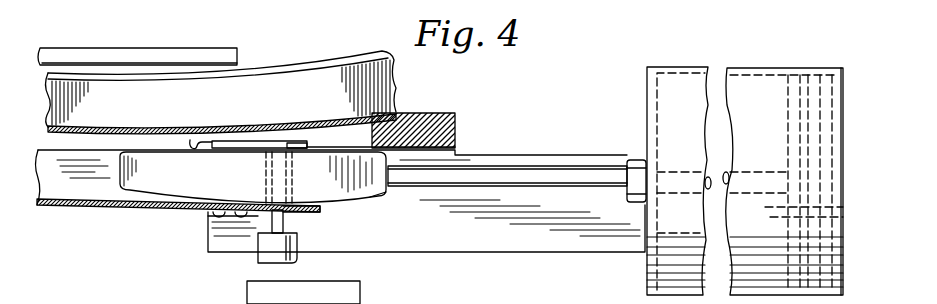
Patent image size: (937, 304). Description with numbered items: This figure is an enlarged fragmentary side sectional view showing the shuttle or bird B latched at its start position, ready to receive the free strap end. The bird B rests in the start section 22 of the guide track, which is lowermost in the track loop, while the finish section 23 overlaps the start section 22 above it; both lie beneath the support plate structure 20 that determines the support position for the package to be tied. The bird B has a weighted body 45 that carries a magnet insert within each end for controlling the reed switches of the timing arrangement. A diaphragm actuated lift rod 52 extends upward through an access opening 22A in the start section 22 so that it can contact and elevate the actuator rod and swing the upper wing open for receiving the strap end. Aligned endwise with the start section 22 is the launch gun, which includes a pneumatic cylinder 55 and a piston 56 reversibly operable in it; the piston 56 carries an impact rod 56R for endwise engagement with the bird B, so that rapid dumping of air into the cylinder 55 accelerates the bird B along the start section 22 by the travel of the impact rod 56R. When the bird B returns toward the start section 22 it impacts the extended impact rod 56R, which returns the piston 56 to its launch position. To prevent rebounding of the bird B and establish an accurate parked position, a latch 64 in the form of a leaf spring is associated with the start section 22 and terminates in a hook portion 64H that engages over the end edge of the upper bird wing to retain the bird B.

The support plate structure 20 is at (204, 52).
The start section 22 is at (64, 208).
The access opening 22A is at (291, 211).
The finish section 23 is at (62, 90).
The weighted body 45 is at (142, 188).
The diaphragm actuated lift rod 52 is at (268, 228).
The pneumatic cylinder 55 is at (668, 66).
The piston 56 is at (790, 108).
The impact rod 56R is at (541, 175).
The latch 64 is at (272, 140).
The hook portion 64H is at (193, 139).
The bird B is at (370, 200).